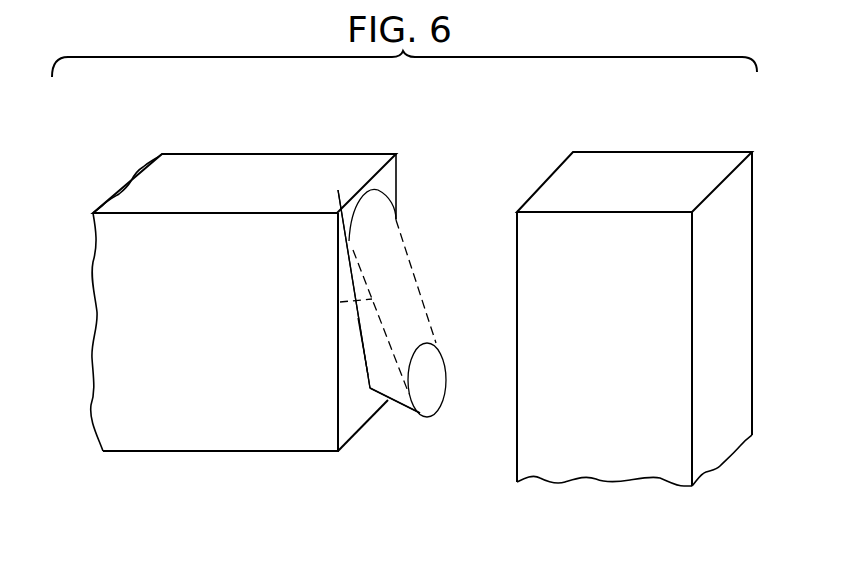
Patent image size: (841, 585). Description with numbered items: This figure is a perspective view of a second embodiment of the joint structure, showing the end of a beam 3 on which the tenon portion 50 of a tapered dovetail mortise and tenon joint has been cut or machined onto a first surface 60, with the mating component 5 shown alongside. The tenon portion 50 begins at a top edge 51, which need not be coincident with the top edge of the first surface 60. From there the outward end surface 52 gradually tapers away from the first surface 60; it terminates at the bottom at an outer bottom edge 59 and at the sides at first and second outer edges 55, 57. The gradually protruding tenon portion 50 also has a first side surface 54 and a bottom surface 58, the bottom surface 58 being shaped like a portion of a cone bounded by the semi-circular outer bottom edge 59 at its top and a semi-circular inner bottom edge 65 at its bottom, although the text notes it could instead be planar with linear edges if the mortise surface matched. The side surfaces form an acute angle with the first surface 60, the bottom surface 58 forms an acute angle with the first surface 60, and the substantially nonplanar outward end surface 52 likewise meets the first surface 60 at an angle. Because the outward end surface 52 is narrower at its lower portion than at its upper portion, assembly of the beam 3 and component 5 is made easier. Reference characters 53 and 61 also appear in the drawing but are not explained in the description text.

The beam 3 is at (236, 143).
The component 5 is at (580, 486).
The tenon portion 50 is at (386, 425).
The top edge 51 is at (356, 212).
The outward end surface 52 is at (402, 285).
The leading edge 53 is at (338, 190).
The first side surface 54 is at (373, 360).
The first outer edge 55 is at (340, 302).
The second outer edge 57 is at (411, 256).
The bottom surface 58 is at (416, 414).
The outer bottom edge 59 is at (440, 412).
The first surface 60 is at (357, 412).
The front face 61 is at (338, 327).
The inner bottom edge 65 is at (383, 406).